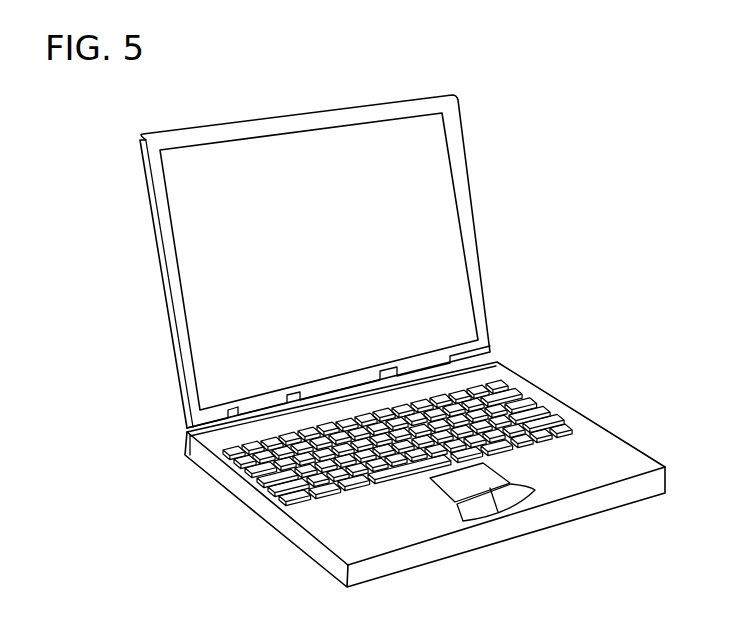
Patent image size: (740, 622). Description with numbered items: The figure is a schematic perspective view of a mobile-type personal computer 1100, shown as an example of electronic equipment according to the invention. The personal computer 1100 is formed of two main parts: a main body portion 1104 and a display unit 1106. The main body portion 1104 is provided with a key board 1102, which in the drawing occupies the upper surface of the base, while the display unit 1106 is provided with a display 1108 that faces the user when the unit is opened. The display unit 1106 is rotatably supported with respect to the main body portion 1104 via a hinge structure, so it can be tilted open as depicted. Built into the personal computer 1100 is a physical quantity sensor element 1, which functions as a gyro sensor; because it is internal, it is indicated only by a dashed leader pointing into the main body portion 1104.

The personal computer 1100 is at (486, 114).
The key board 1102 is at (528, 396).
The main body portion 1104 is at (415, 530).
The display unit 1106 is at (468, 185).
The display 1108 is at (305, 172).
The physical quantity sensor element 1 is at (605, 458).